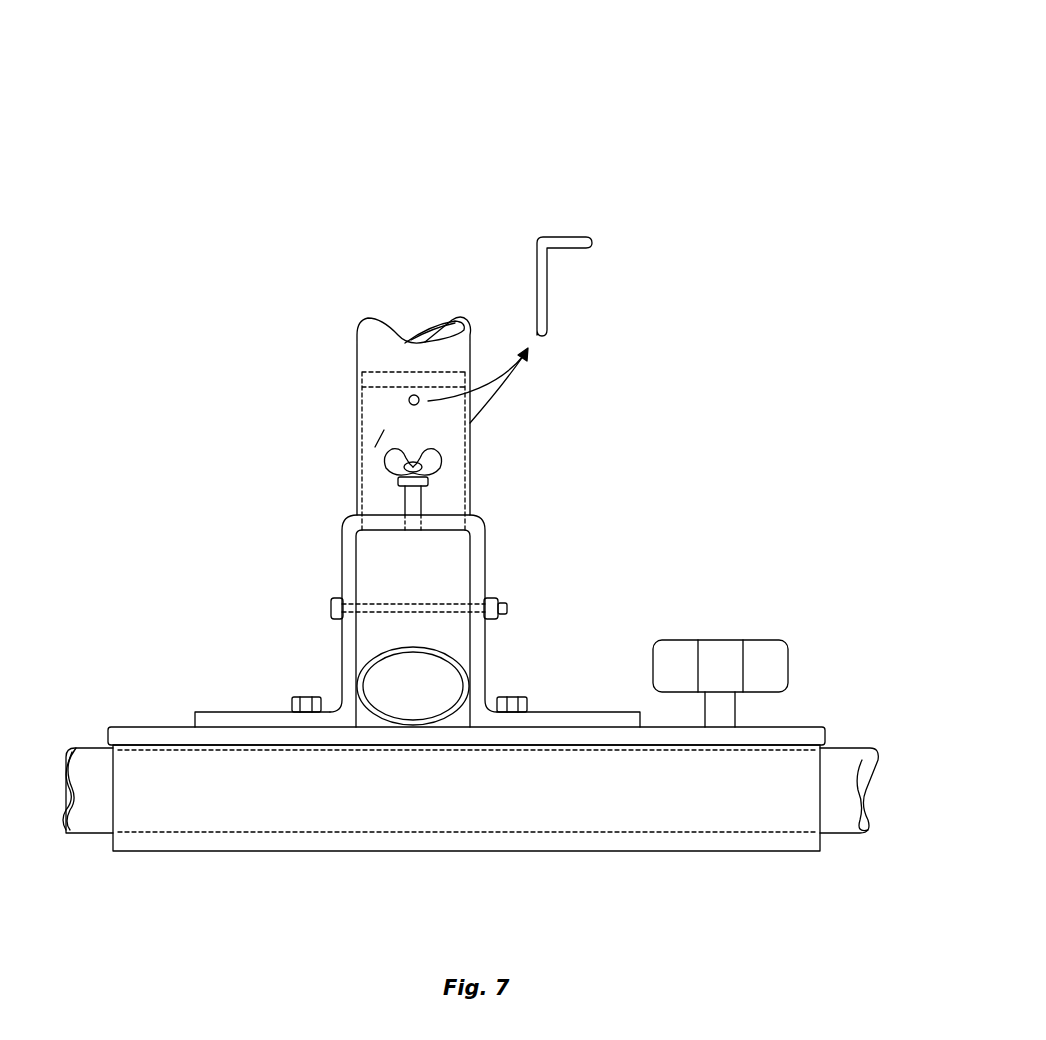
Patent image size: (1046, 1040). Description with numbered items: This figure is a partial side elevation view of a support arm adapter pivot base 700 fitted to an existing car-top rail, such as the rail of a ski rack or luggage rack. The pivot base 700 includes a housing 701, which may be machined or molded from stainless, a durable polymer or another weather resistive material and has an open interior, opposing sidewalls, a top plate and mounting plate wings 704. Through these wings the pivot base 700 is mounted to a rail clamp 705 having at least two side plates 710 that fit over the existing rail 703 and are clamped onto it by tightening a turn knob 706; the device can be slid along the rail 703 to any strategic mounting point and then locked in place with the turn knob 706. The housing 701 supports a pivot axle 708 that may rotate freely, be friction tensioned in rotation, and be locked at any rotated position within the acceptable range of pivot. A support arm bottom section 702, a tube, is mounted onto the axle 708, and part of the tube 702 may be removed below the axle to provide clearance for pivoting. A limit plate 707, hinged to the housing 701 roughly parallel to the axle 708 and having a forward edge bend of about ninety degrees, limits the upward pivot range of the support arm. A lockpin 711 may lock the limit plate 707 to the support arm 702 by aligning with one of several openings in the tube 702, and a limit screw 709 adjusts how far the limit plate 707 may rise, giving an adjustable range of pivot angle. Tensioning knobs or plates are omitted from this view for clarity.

The support arm adapter pivot base 700 is at (552, 88).
The housing 701 is at (342, 562).
The support arm bottom section 702 is at (357, 350).
The existing rail 703 is at (80, 746).
The mounting plate wings 704 is at (546, 712).
The rail clamp 705 is at (176, 727).
The turn knob 706 is at (722, 640).
The limit plate 707 is at (376, 445).
The pivot axle 708 is at (504, 600).
The limit screw 709 is at (422, 497).
The side plates 710 is at (760, 773).
The lockpin 711 is at (547, 262).